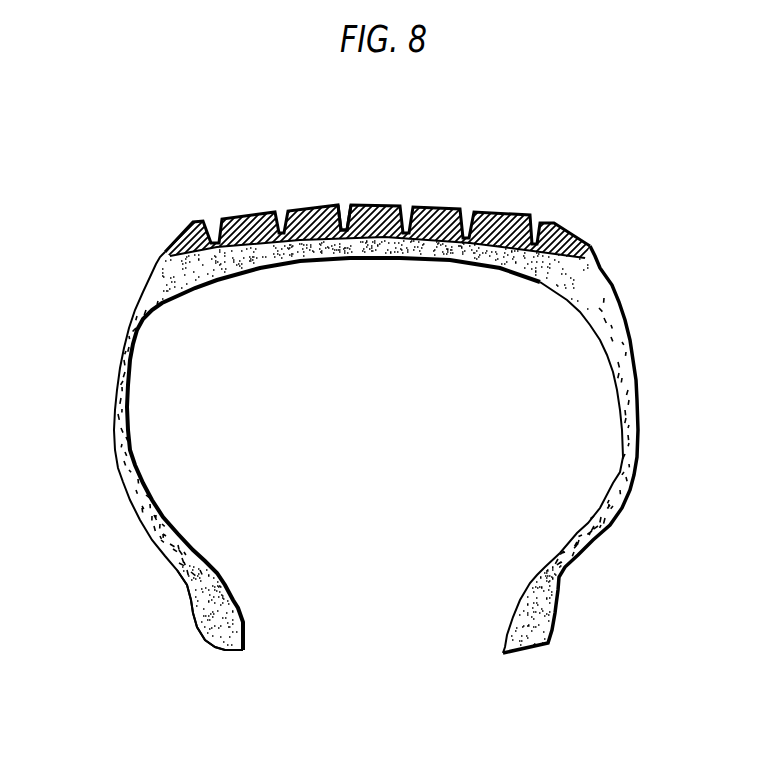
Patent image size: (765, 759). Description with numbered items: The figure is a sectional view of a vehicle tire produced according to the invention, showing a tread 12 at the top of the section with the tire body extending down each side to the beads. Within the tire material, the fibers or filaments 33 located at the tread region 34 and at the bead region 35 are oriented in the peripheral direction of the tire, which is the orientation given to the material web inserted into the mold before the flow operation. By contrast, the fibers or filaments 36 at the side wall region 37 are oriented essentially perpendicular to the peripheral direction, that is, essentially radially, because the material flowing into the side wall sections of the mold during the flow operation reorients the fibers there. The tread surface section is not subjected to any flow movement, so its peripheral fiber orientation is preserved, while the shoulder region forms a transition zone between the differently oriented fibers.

The tread 12 is at (246, 226).
The fibers or filaments 33 is at (425, 238).
The tread region 34 is at (347, 192).
The bead region 35 is at (181, 626).
The fibers or filaments 36 is at (120, 428).
The side wall region 37 is at (100, 386).